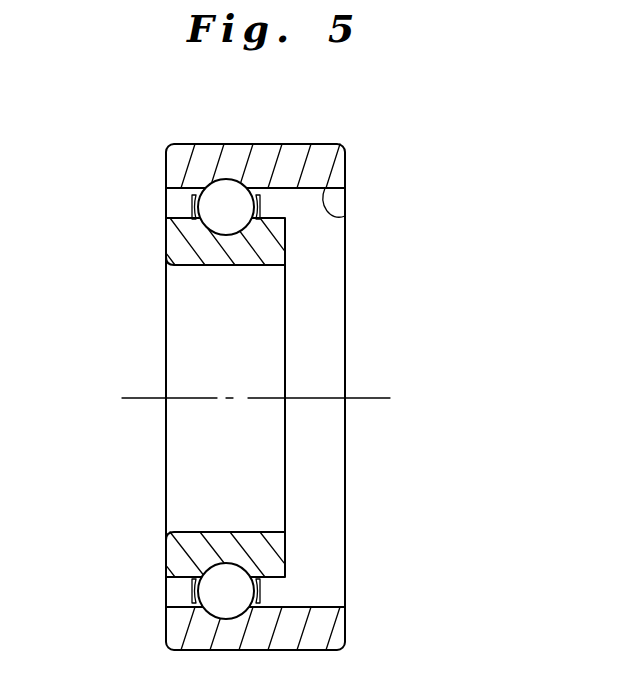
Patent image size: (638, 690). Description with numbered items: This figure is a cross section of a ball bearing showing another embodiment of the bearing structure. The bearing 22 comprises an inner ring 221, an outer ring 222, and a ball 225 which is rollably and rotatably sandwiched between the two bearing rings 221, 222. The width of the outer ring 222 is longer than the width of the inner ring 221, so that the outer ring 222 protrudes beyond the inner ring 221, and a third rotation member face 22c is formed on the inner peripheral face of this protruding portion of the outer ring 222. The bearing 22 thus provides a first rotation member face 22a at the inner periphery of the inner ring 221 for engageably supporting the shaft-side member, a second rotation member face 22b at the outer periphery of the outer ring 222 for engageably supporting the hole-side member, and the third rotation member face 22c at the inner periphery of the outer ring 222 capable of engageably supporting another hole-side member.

The bearing 22 is at (492, 105).
The first rotation member face 22a is at (261, 265).
The second rotation member face 22b is at (315, 144).
The third rotation member face 22c is at (345, 216).
The inner ring 221 is at (182, 250).
The outer ring 222 is at (187, 168).
The ball 225 is at (212, 205).